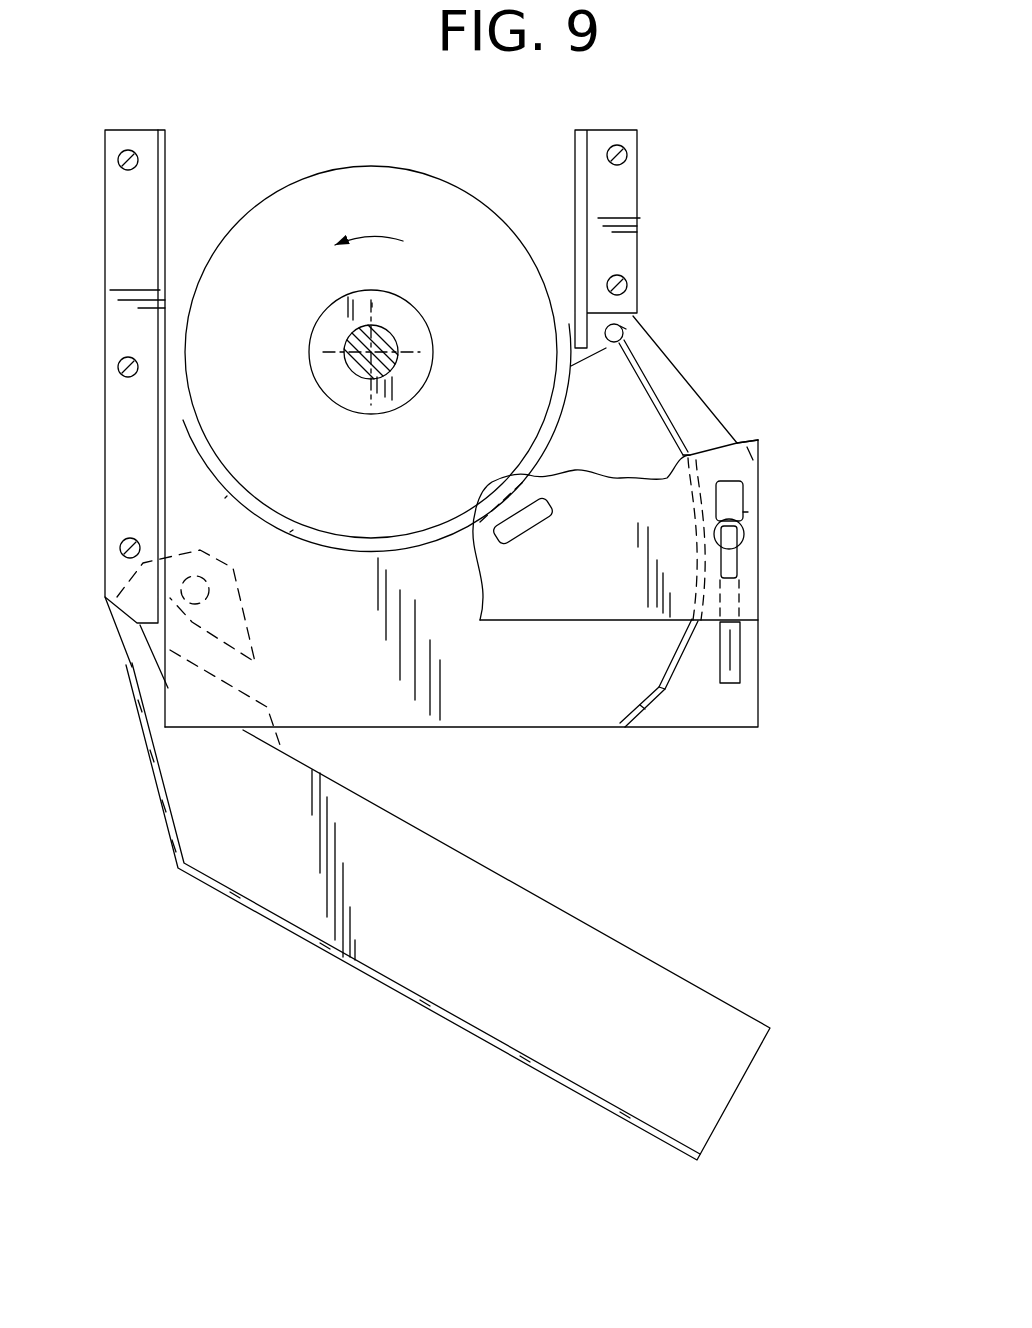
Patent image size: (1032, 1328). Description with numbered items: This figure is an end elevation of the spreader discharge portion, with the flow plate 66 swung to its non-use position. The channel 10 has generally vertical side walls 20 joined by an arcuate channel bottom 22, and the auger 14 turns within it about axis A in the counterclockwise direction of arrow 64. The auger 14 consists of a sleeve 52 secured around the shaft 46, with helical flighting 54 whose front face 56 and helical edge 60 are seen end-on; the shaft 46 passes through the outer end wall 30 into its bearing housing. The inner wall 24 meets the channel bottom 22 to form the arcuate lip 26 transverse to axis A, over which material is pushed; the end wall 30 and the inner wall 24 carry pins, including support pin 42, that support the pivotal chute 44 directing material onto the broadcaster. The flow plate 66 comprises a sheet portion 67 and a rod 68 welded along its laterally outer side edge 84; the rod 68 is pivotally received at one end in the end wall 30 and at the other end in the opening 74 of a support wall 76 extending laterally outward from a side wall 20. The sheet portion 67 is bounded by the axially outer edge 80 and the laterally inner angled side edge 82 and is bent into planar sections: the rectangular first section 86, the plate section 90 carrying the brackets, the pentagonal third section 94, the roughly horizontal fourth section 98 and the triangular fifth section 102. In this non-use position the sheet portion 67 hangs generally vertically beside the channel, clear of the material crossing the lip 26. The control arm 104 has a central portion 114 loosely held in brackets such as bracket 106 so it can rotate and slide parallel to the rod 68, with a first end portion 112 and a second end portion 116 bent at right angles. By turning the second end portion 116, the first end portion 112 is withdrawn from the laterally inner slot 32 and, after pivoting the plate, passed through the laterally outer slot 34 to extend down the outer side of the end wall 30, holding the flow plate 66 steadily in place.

The channel 10 is at (170, 133).
The auger 14 is at (315, 178).
The side walls 20 is at (158, 212).
The channel bottom 22 is at (290, 532).
The inner wall 24 is at (370, 705).
The lip 26 is at (225, 498).
The outer end wall 30 is at (760, 473).
The laterally inner slot 32 is at (525, 530).
The laterally outer slot 34 is at (738, 497).
The support pin 42 is at (230, 585).
The pivotal chute 44 is at (483, 1018).
The shaft 46 is at (357, 336).
The sleeve 52 is at (420, 320).
The helical flighting 54 is at (474, 190).
The front face 56 is at (275, 218).
The helical edge 60 is at (430, 176).
The arrow 64 is at (375, 237).
The flow plate 66 is at (653, 706).
The sheet portion 67 is at (752, 444).
The rod 68 is at (628, 333).
The opening 74 is at (626, 329).
The support wall 76 is at (680, 383).
The axially outer edge 80 is at (691, 443).
The laterally inner angled side edge 82 is at (665, 684).
The laterally outer side edge 84 is at (555, 372).
The first section 86 is at (640, 395).
The plate section 90 is at (700, 512).
The third section 94 is at (697, 596).
The fourth section 98 is at (676, 655).
The fifth section 102 is at (637, 708).
The control arm 104 is at (745, 662).
The bracket 106 is at (752, 545).
The first end portion 112 is at (738, 566).
The central portion 114 is at (748, 512).
The second end portion 116 is at (735, 637).
The axis A is at (350, 360).